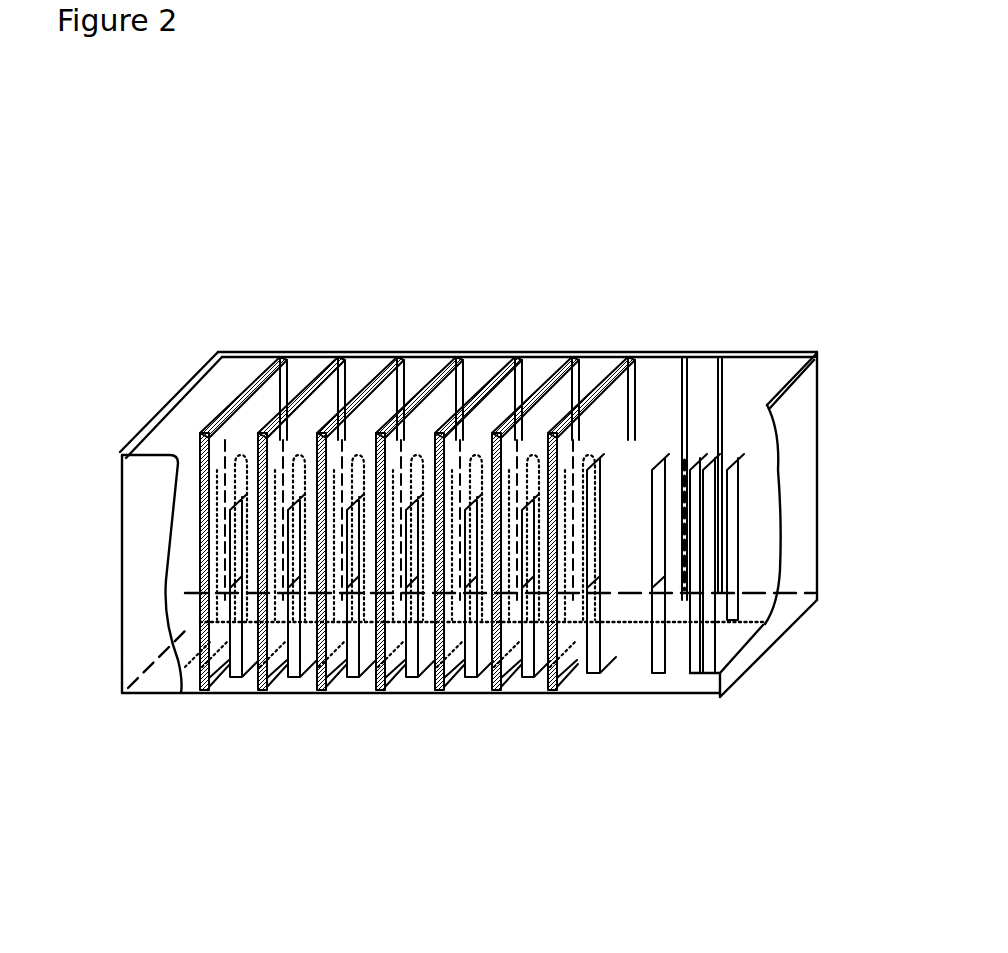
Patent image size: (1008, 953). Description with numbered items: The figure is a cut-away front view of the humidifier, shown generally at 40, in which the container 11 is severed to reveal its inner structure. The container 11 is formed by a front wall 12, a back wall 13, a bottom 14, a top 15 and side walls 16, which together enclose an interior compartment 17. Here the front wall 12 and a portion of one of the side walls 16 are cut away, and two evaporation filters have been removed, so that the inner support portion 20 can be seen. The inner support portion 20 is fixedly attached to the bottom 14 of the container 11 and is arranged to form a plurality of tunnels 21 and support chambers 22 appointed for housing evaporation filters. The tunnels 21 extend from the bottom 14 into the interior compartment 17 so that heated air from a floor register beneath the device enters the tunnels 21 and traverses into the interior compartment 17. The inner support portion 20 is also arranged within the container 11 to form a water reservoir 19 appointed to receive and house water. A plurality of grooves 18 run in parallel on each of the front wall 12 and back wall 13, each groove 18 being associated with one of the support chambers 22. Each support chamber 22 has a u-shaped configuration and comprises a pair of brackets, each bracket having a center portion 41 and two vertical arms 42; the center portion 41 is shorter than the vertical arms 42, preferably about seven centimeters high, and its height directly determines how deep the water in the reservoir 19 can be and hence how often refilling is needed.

The cut-away front view of humidifier 40 is at (249, 231).
The container 11 is at (140, 565).
The front wall 12 is at (137, 653).
The back wall 13 is at (807, 408).
The bottom 14 is at (708, 683).
The top 15 is at (752, 352).
The side walls 16 is at (807, 458).
The interior compartment 17 is at (233, 367).
The grooves 18 is at (500, 363).
The water reservoir 19 is at (805, 570).
The inner support portion 20 is at (365, 657).
The tunnels 21 is at (307, 673).
The support chambers 22 is at (218, 628).
The center portion 41 is at (700, 533).
The vertical arms 42 is at (738, 493).